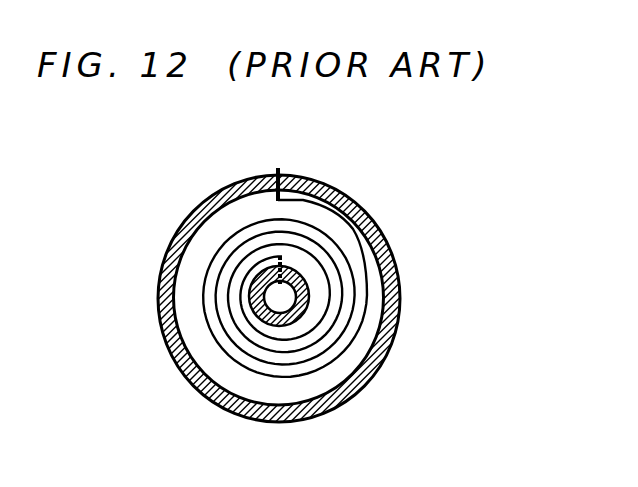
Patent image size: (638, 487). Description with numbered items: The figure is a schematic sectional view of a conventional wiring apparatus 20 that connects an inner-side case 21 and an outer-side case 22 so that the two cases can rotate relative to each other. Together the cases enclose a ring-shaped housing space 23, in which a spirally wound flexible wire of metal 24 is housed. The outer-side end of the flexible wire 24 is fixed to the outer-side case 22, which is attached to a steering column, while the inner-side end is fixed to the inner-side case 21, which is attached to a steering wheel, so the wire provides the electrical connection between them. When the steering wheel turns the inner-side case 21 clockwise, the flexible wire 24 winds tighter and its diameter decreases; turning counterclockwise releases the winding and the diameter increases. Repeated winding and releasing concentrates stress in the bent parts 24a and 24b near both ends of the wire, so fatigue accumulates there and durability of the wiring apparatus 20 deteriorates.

The wiring apparatus 20 is at (319, 302).
The inner-side case 21 is at (296, 316).
The outer-side case 22 is at (180, 233).
The housing space 23 is at (367, 328).
The flexible wire 24 is at (267, 250).
The bent part 24a is at (304, 190).
The bent part 24b is at (281, 258).